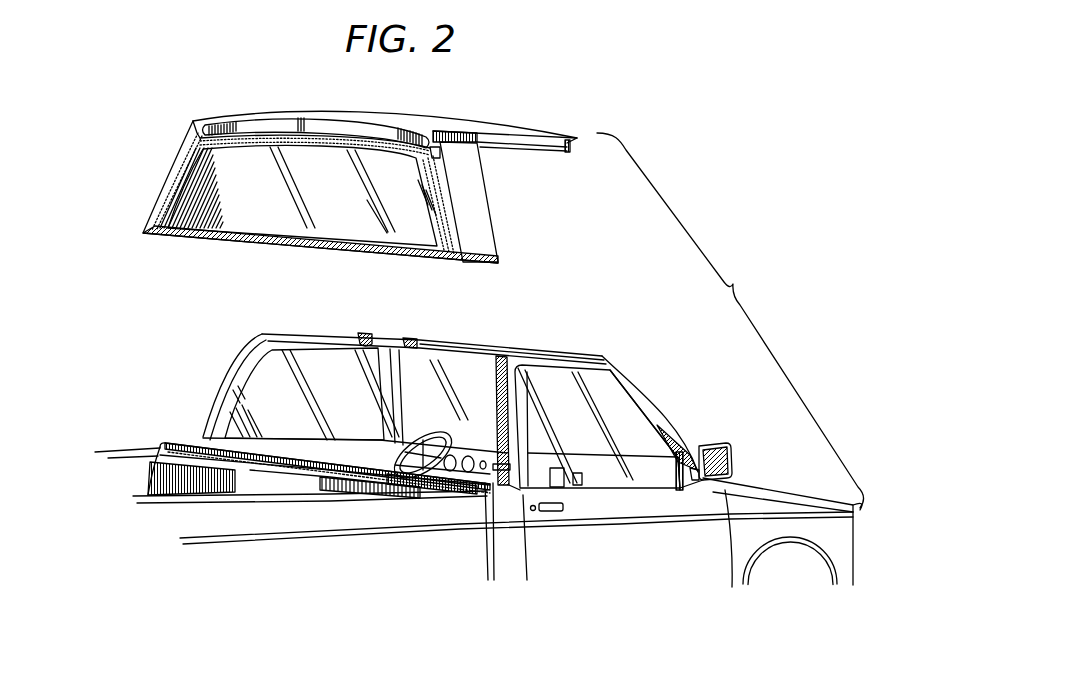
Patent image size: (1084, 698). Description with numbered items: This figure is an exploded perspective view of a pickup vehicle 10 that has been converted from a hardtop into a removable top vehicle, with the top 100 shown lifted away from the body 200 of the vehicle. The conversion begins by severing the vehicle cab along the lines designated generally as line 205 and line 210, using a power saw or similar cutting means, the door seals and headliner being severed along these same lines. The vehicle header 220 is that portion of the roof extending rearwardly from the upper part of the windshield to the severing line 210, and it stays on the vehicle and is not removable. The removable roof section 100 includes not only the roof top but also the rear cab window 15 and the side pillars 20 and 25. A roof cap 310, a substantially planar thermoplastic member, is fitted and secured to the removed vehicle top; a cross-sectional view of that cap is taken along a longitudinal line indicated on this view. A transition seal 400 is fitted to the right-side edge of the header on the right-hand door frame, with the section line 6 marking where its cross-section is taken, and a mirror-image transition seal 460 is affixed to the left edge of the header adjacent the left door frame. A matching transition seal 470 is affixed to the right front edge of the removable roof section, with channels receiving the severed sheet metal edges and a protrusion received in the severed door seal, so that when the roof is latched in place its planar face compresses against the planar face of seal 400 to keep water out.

The top 100 is at (260, 100).
The pickup vehicle 10 is at (300, 82).
The rear cab window 15 is at (194, 167).
The side pillar 25 is at (163, 192).
The roof cap 310 is at (470, 118).
The side pillar 20 is at (445, 189).
The transition seal 470 is at (568, 152).
The body 200 is at (682, 421).
The vehicle header 220 is at (452, 338).
The transition seal 400 is at (590, 352).
The section line 6- 6 is at (585, 305).
The transition seal 460 is at (362, 331).
The severing line 210 is at (620, 362).
The severing line 205 is at (182, 434).